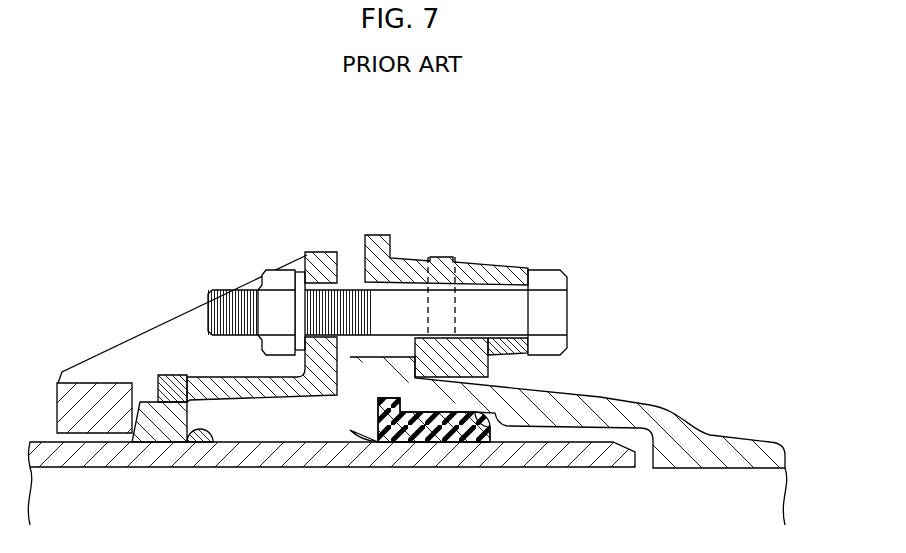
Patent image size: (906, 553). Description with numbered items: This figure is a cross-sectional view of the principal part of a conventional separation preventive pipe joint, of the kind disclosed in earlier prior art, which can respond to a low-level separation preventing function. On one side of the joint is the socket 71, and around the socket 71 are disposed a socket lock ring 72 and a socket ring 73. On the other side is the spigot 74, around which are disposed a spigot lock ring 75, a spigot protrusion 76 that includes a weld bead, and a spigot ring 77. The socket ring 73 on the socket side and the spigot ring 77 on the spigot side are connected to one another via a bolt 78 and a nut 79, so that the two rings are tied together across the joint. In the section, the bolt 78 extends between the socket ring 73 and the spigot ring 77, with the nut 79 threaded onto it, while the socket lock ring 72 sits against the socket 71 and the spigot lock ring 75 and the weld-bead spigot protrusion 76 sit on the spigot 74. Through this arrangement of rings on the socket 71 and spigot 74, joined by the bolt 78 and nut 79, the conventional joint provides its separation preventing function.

The socket 71 is at (493, 402).
The socket lock ring 72 is at (463, 348).
The socket ring 73 is at (405, 257).
The spigot 74 is at (590, 455).
The spigot lock ring 75 is at (147, 412).
The spigot protrusion 76 is at (193, 410).
The spigot ring 77 is at (80, 392).
The bolt 78 is at (553, 313).
The nut 79 is at (268, 280).